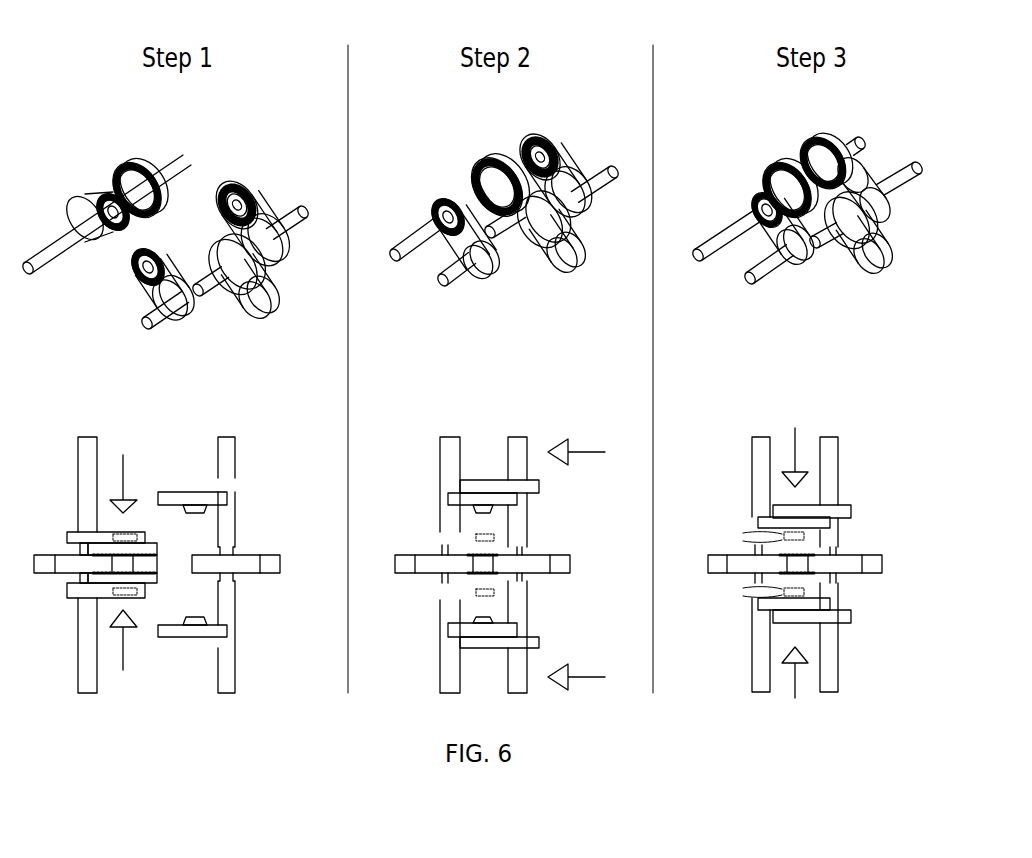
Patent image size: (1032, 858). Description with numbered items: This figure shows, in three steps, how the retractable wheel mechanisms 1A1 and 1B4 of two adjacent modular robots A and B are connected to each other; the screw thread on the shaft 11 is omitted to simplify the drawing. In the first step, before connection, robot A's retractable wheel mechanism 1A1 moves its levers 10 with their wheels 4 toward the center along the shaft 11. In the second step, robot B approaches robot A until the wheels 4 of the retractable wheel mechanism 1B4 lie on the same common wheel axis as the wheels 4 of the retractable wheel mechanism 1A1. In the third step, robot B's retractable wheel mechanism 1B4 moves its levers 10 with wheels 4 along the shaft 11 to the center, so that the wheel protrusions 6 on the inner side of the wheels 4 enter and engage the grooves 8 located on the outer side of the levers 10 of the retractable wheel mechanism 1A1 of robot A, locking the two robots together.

The retractable wheel mechanism of modular robot A 1A1 is at (97, 167).
The retractable wheel mechanism of modular robot B 1B4 is at (282, 278).
The wheels 4 is at (147, 167).
The wheel protrusions 6 is at (230, 207).
The groove located on the lever 8 is at (110, 227).
The lever 10 is at (82, 215).
The shaft 11 is at (47, 260).